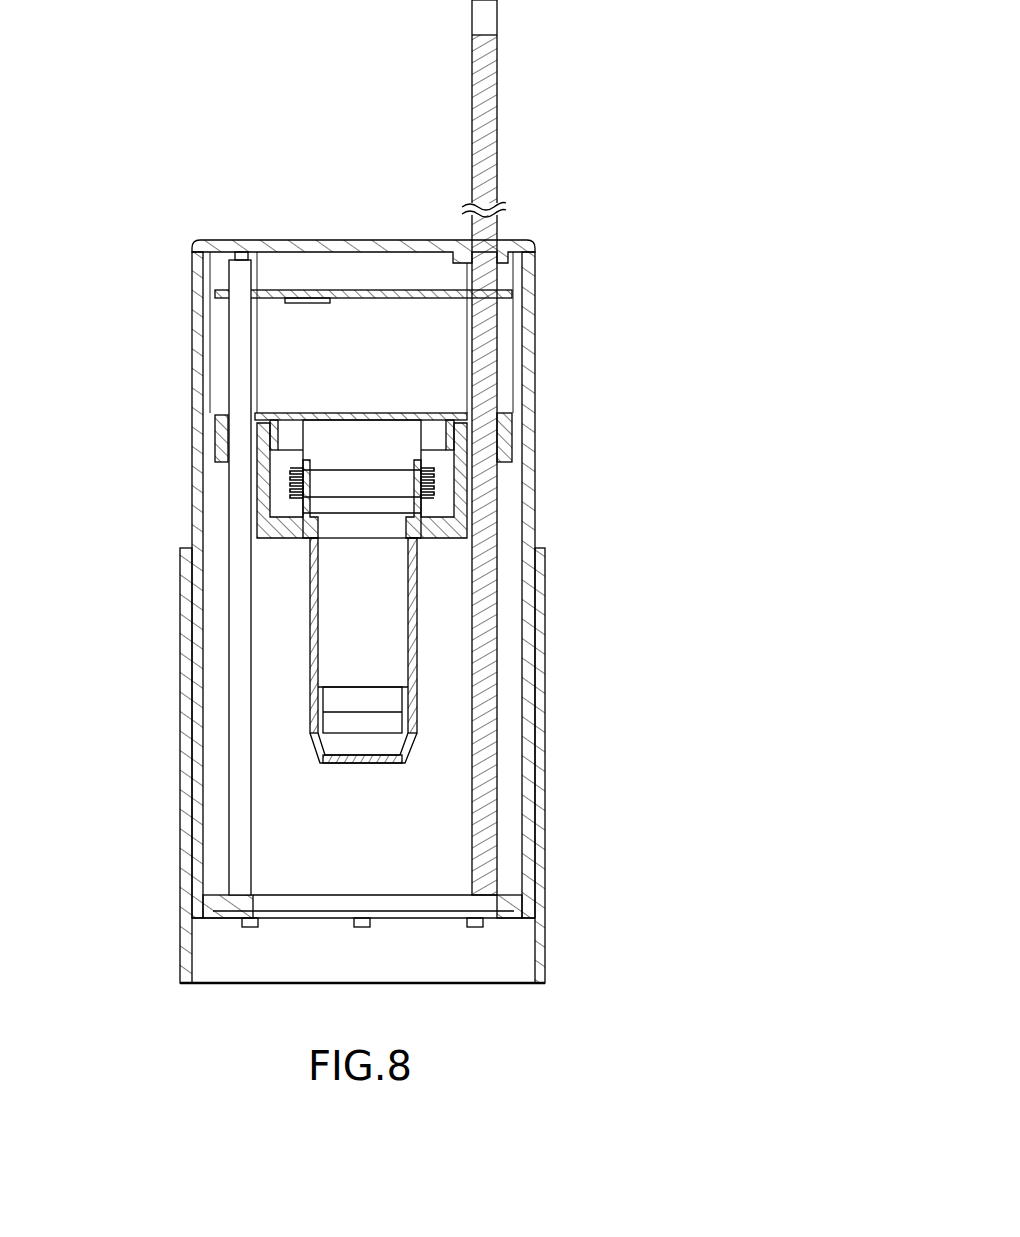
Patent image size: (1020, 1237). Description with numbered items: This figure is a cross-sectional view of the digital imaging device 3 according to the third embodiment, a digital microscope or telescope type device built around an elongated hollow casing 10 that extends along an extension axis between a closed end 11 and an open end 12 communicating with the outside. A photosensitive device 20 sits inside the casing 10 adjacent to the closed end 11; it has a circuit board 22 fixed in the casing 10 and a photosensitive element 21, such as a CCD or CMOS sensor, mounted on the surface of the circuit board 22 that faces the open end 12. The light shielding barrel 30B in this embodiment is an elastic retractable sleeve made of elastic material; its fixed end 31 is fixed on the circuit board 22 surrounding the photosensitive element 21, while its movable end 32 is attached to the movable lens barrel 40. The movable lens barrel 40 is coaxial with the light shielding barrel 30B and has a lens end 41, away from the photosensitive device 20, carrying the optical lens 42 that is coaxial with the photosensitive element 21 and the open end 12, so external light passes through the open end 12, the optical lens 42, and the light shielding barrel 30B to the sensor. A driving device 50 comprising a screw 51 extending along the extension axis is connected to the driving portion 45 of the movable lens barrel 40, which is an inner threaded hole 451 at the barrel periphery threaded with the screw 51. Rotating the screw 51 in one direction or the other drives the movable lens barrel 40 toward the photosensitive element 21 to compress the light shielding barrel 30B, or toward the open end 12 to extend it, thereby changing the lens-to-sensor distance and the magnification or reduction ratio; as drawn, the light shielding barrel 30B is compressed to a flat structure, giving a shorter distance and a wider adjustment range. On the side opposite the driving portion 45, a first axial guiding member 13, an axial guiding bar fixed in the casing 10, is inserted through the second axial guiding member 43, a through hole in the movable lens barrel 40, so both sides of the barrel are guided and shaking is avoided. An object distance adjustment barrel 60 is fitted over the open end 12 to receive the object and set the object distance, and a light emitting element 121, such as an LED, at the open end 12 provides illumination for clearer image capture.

The digital imaging device 3 is at (168, 203).
The casing 10 is at (527, 625).
The closed end 11 is at (285, 240).
The open end 12 is at (495, 905).
The light emitting element 121 is at (478, 927).
The first axial guiding member 13 is at (232, 352).
The photosensitive device 20 is at (372, 410).
The photosensitive element 21 is at (300, 417).
The circuit board 22 is at (470, 412).
The light shielding barrel 30B is at (440, 480).
The fixed end 31 is at (293, 468).
The movable end 32 is at (470, 492).
The movable lens barrel 40 is at (420, 650).
The lens end 41 is at (305, 538).
The optical lens 42 is at (368, 762).
The second axial guiding member 43 is at (278, 428).
The driving portion 45 is at (503, 437).
The inner threaded hole 451 is at (500, 415).
The driving device 50 is at (508, 78).
The screw 51 is at (498, 128).
The object distance adjustment barrel 60 is at (187, 690).